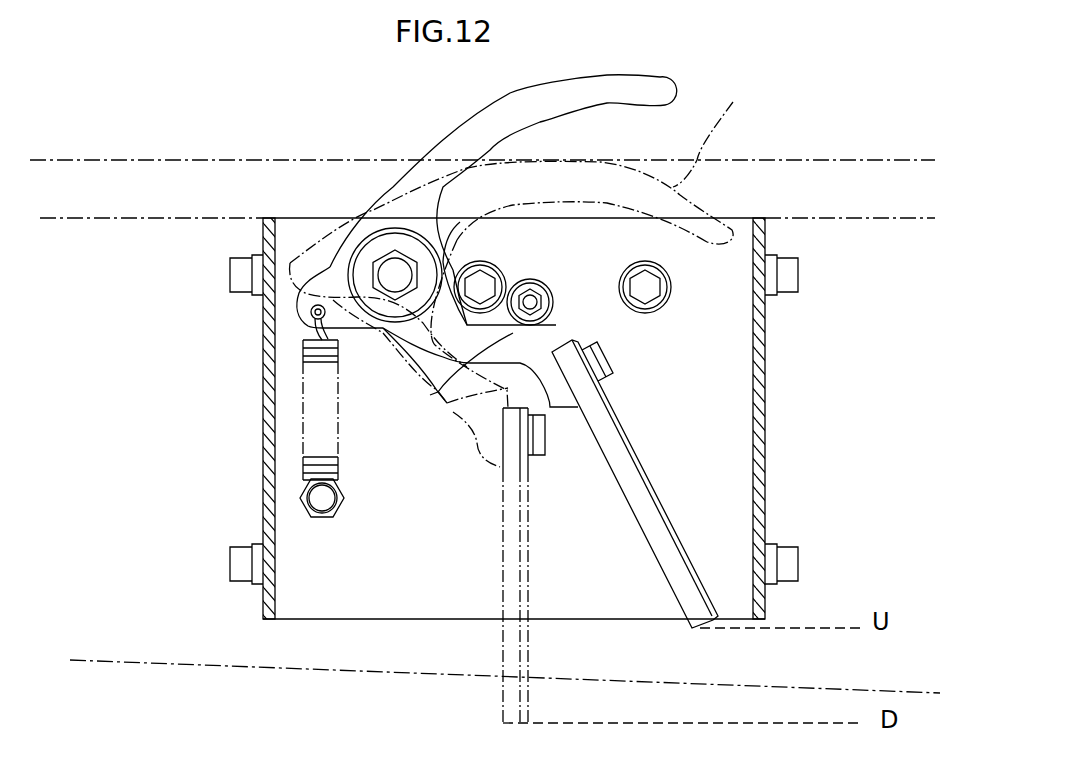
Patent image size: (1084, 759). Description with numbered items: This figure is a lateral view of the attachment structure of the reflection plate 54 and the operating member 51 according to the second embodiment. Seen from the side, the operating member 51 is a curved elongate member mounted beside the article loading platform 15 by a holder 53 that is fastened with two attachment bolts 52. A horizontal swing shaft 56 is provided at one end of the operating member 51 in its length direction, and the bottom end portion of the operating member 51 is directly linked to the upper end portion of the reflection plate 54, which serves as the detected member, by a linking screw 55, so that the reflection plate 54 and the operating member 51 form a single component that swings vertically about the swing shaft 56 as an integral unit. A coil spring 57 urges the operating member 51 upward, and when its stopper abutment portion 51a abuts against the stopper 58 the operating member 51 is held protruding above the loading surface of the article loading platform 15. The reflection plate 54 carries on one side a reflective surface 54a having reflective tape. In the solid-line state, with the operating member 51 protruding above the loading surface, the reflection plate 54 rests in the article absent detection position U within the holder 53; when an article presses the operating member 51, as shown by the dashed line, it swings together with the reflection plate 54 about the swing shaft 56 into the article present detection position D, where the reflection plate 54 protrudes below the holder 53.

The article loading platform 15 is at (170, 153).
The operating member 51 is at (643, 92).
The stopper abutment portion 51a is at (483, 395).
The attachment bolts 52 is at (480, 282).
The holder 53 is at (768, 438).
The reflection plate 54 is at (637, 518).
The reflective surface 54a is at (527, 630).
The linking screw 55 is at (613, 355).
The swing shaft 56 is at (383, 270).
The coil spring 57 is at (302, 463).
The stopper 58 is at (548, 330).